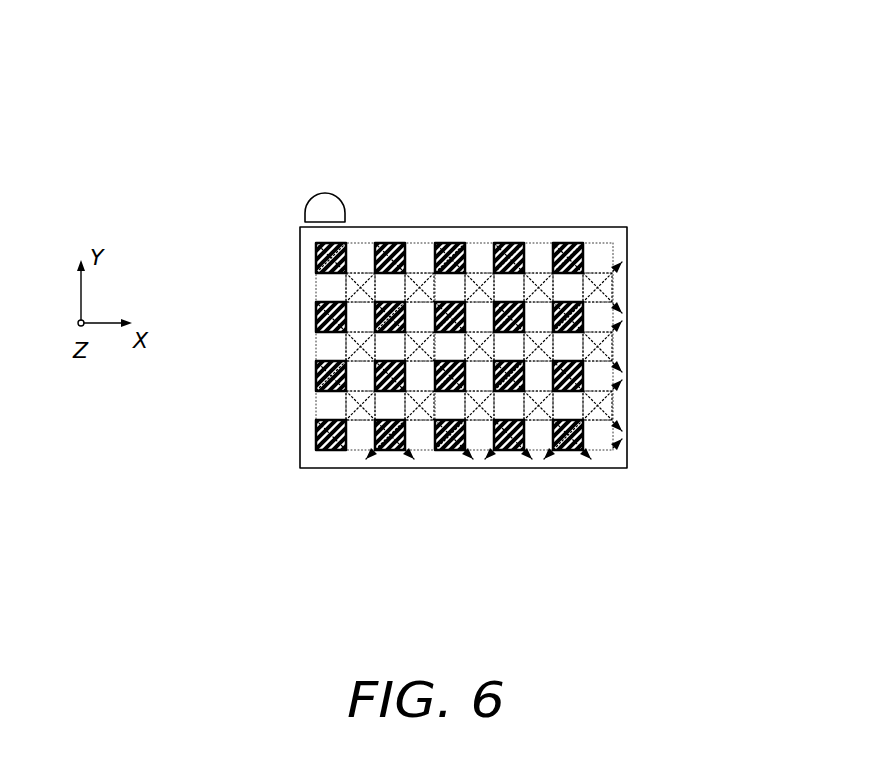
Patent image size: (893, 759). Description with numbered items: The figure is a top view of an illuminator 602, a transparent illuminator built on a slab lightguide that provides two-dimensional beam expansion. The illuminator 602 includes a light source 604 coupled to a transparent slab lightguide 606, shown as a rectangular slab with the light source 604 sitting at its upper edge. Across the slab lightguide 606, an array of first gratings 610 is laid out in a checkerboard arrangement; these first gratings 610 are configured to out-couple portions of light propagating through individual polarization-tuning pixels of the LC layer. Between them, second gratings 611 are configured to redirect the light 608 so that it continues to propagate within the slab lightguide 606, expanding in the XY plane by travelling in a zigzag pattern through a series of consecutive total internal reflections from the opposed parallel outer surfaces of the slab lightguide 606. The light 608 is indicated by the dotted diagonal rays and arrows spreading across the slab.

The illuminator 602 is at (619, 105).
The light source 604 is at (326, 203).
The transparent slab lightguide 606 is at (613, 453).
The light 608 is at (318, 244).
The first gratings 610 is at (447, 250).
The second gratings 611 is at (539, 268).